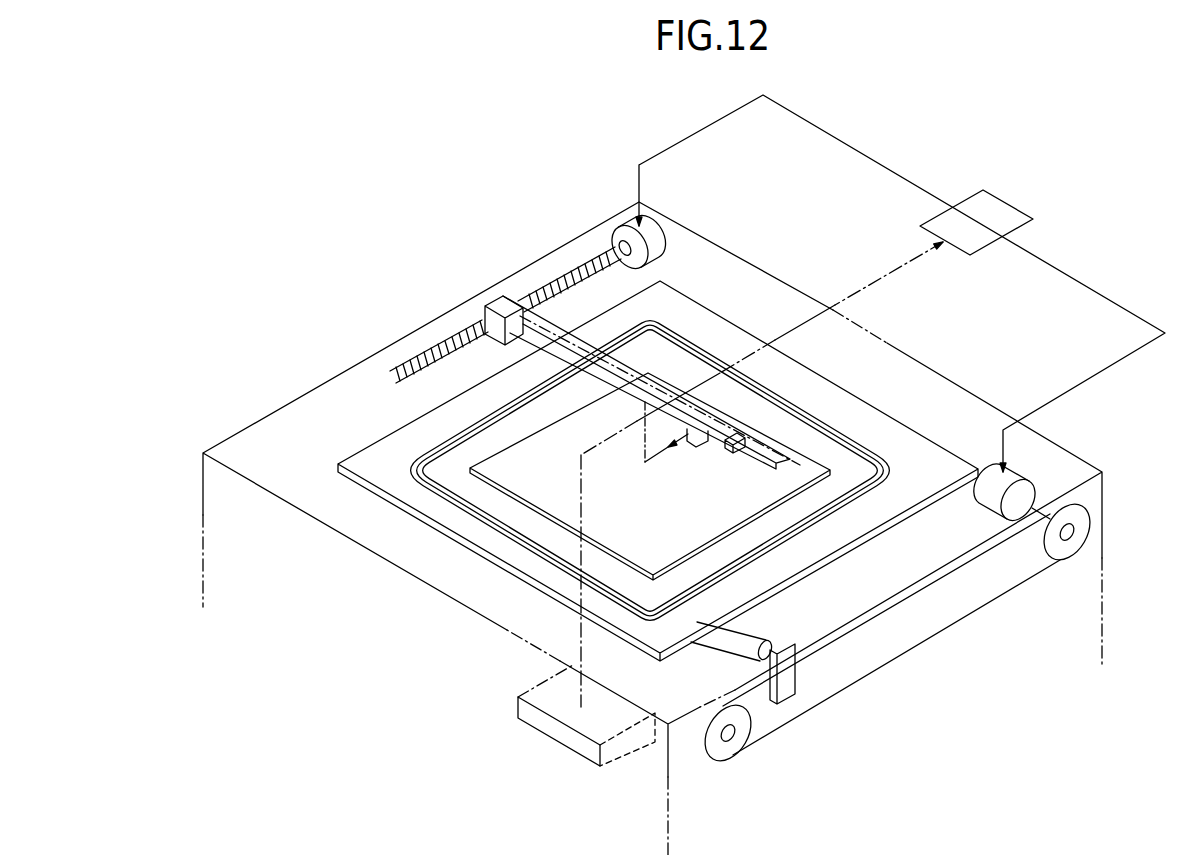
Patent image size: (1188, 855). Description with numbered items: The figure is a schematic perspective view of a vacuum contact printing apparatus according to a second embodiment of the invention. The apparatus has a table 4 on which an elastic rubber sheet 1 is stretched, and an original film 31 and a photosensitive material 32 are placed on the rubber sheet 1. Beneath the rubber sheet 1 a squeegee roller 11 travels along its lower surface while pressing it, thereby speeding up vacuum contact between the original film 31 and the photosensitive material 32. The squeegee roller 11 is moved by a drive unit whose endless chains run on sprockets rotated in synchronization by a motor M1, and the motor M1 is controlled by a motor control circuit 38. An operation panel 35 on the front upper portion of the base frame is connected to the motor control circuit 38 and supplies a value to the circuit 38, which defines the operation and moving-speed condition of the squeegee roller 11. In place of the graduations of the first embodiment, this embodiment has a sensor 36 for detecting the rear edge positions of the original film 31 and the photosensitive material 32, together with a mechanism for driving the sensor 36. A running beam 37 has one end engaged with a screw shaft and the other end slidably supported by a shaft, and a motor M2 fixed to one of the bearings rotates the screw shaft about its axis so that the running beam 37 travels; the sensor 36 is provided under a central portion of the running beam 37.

The elastic rubber sheet 1 is at (462, 548).
The table 4 is at (345, 401).
The squeegee roller 11 is at (768, 634).
The original film 31 is at (802, 398).
The photosensitive material 32 is at (735, 443).
The operation panel 35 is at (578, 753).
The sensor 36 is at (694, 448).
The running beam 37 is at (560, 332).
The motor control circuit 38 is at (1015, 200).
The motor M1 is at (986, 511).
The motor M2 is at (658, 255).